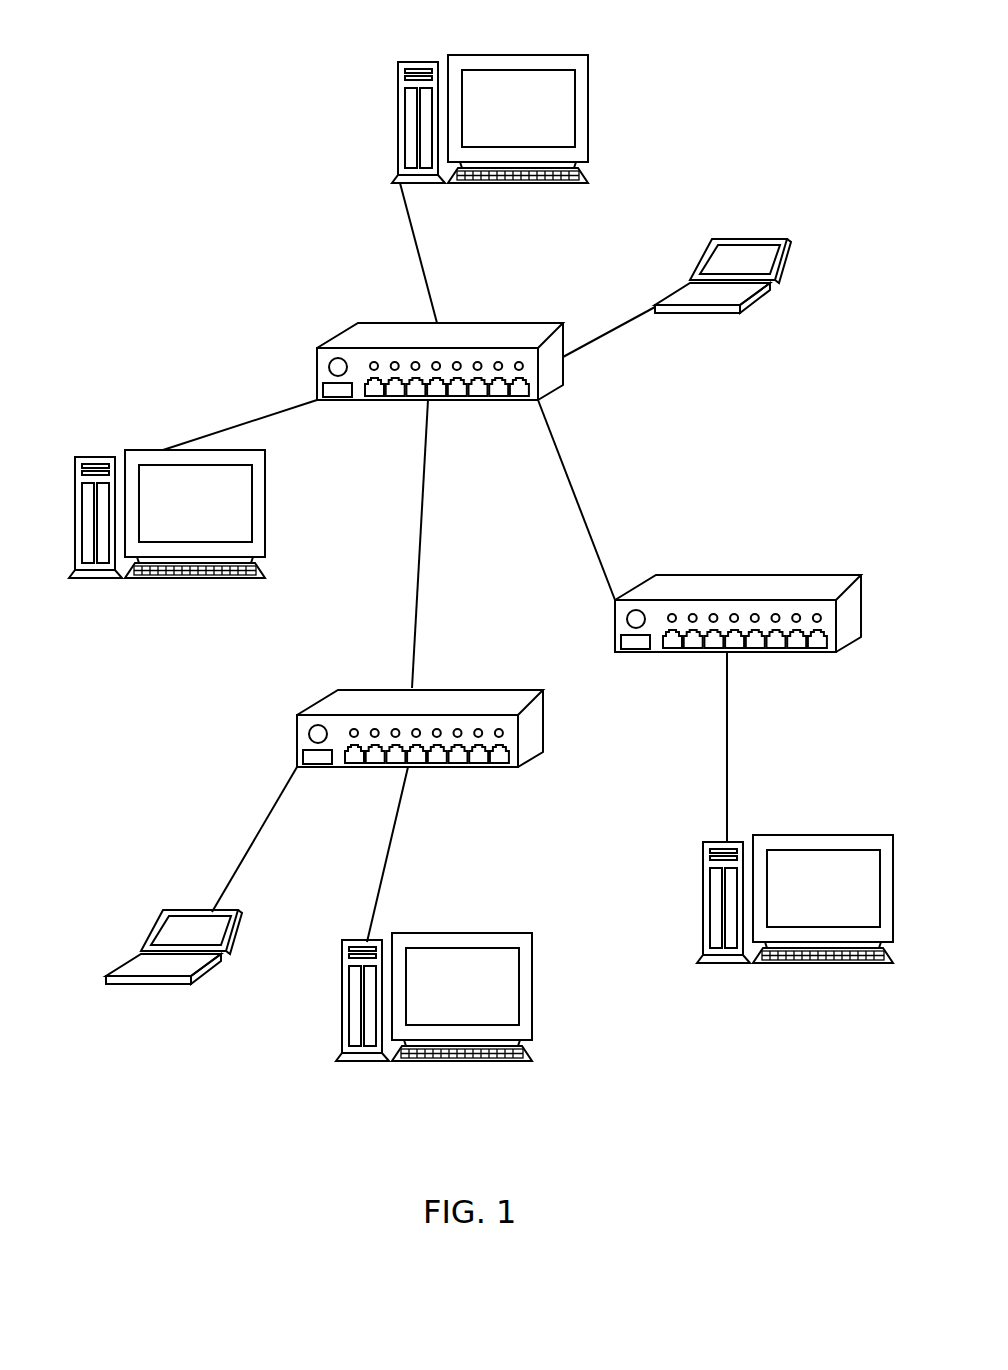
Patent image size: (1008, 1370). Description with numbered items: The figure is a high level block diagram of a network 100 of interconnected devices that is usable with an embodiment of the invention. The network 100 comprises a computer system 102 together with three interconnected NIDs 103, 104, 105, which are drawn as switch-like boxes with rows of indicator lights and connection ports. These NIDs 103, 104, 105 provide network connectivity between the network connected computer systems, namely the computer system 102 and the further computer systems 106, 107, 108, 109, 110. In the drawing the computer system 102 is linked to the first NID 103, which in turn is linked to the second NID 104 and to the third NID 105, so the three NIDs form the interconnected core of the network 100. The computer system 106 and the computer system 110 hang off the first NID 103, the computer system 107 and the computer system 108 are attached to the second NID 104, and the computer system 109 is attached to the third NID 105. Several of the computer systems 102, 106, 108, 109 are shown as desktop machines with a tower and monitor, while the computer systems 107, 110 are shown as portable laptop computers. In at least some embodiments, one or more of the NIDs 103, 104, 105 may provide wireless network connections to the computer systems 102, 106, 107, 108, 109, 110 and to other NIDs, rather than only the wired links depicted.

The network 100 is at (137, 32).
The computer system 102 is at (400, 122).
The NID 103 is at (317, 373).
The NID 104 is at (297, 740).
The NID 105 is at (866, 600).
The computer system 106 is at (75, 460).
The computer system 107 is at (142, 953).
The computer system 108 is at (347, 1003).
The computer system 109 is at (708, 908).
The computer system 110 is at (783, 258).